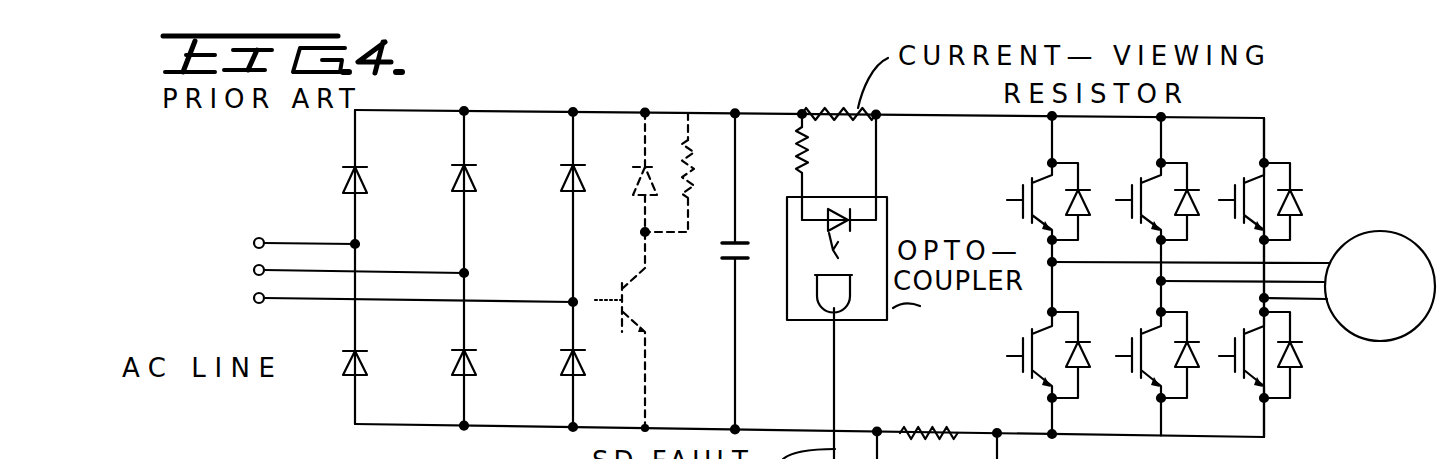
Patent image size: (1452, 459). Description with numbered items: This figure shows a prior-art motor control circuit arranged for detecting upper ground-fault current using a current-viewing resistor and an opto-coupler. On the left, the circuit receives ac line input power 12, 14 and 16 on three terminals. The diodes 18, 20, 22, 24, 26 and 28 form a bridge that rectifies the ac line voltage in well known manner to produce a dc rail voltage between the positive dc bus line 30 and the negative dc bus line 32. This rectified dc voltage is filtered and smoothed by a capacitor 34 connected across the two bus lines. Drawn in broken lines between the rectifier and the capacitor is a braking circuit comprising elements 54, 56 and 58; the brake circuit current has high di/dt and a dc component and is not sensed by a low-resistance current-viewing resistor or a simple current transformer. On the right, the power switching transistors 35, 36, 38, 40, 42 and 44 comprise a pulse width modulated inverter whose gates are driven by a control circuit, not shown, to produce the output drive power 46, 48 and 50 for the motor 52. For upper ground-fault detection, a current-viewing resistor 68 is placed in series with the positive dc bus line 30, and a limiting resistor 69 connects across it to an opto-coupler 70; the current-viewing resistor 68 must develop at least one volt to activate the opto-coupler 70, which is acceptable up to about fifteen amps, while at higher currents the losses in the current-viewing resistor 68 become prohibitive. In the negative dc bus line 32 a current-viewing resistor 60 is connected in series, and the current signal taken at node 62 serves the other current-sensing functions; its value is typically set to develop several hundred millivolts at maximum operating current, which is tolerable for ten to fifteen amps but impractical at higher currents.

The ac line input power 12 is at (254, 298).
The ac line input power 14 is at (254, 270).
The ac line input power 16 is at (254, 243).
The diode 18 is at (474, 185).
The diode 20 is at (468, 362).
The diode 22 is at (562, 182).
The diode 24 is at (562, 360).
The diode 26 is at (362, 185).
The diode 28 is at (345, 362).
The positive dc bus line 30 is at (710, 111).
The negative dc bus line 32 is at (530, 428).
The capacitor 34 is at (748, 244).
The power switching transistor 35 is at (1066, 178).
The power switching transistor 36 is at (1060, 378).
The power switching transistor 38 is at (1168, 182).
The power switching transistor 40 is at (1165, 378).
The power switching transistor 42 is at (1278, 178).
The power switching transistor 44 is at (1278, 383).
The output drive power 46 is at (1298, 262).
The output drive power 48 is at (1305, 280).
The output drive power 50 is at (1307, 300).
The motor 52 is at (1390, 340).
The braking circuit element 54 is at (632, 308).
The braking circuit element 56 is at (686, 170).
The braking circuit element 58 is at (645, 182).
The current-viewing resistor 60 is at (932, 430).
The node 62 is at (877, 431).
The current-viewing resistor 68 is at (840, 108).
The limiting resistor 69 is at (797, 160).
The opto-coupler 70 is at (877, 243).